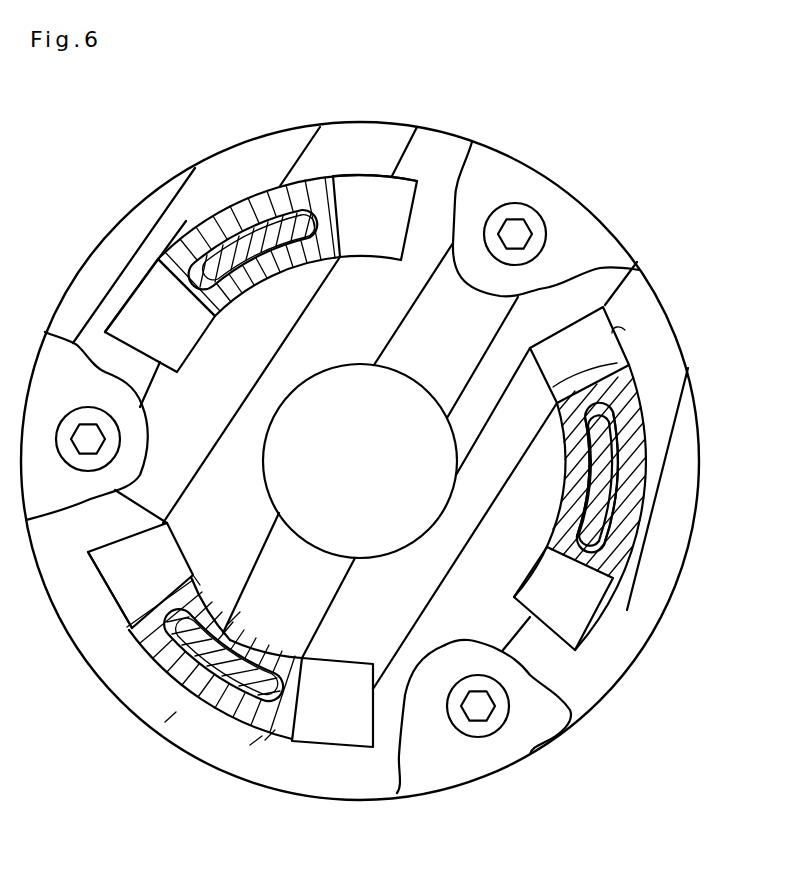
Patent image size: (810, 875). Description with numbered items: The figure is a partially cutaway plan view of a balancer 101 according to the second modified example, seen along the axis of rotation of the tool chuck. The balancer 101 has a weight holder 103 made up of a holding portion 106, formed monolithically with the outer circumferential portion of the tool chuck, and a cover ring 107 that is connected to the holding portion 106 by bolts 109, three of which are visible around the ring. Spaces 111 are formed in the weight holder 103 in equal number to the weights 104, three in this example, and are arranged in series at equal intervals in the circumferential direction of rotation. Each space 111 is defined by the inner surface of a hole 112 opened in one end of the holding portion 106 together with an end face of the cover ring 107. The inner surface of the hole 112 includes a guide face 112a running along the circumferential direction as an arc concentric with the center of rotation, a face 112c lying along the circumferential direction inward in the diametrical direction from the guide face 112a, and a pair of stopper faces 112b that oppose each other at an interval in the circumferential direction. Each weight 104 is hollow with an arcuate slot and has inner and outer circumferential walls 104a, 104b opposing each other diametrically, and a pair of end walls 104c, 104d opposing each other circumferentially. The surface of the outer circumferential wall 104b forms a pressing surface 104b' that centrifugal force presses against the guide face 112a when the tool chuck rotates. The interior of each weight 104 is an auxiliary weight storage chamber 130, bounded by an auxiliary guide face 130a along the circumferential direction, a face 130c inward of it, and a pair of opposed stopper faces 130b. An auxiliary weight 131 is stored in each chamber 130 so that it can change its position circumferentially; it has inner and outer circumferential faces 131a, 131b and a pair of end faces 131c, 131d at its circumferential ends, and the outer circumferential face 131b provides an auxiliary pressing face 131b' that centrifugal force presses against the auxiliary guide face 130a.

The balancer 101 is at (437, 129).
The weight holder 103 is at (290, 150).
The weight 104 is at (172, 257).
The inner circumferential wall 104a is at (563, 470).
The outer circumferential wall 104b is at (678, 476).
The pressing surface 104b' is at (680, 480).
The end wall 104c is at (620, 395).
The end wall 104d is at (600, 580).
The holding portion 106 is at (583, 680).
The cover ring 107 is at (443, 776).
The bolt 109 is at (493, 716).
The space 111 is at (340, 733).
The hole 112 is at (110, 582).
The guide face 112a is at (612, 333).
The stopper face 112b is at (612, 300).
The face 112c is at (617, 363).
The auxiliary weight storage chamber 130 is at (273, 728).
The auxiliary guide face 130a is at (165, 680).
The stopper face 130b is at (120, 645).
The face 130c is at (252, 675).
The auxiliary weight 131 is at (247, 218).
The inner circumferential face 131a is at (228, 624).
The outer circumferential face 131b is at (205, 773).
The auxiliary pressing face 131b' is at (119, 732).
The end face 131c is at (193, 575).
The end face 131d is at (265, 740).